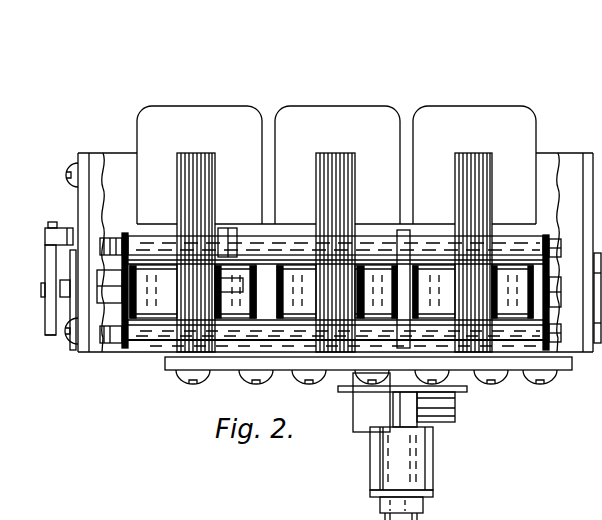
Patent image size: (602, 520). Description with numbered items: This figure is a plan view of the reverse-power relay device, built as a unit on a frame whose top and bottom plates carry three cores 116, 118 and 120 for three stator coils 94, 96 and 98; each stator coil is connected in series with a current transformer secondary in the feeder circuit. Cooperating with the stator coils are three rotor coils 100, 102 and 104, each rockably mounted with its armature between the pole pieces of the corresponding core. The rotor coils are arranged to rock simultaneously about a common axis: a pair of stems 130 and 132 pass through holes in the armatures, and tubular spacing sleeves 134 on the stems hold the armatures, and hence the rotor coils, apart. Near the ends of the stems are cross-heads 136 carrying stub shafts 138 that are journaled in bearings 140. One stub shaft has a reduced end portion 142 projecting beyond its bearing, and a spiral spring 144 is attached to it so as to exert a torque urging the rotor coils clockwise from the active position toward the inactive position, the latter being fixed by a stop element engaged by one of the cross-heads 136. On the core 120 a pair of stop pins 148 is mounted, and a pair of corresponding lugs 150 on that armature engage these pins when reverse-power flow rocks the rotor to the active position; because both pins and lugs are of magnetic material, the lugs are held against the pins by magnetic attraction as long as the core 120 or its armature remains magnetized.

The stator coil 94 is at (488, 112).
The stator coil 96 is at (351, 110).
The stator coil 98 is at (229, 106).
The rotor coil 100 is at (500, 263).
The rotor coil 102 is at (366, 266).
The rotor coil 104 is at (163, 310).
The core 116 is at (463, 152).
The core 118 is at (336, 152).
The core 120 is at (200, 152).
The stem 130 is at (110, 233).
The stem 132 is at (118, 342).
The tubular spacing sleeve 134 is at (165, 340).
The cross-head 136 is at (126, 250).
The stub shaft 138 is at (558, 268).
The bearing 140 is at (71, 228).
The reduced end portion 142 is at (43, 280).
The spiral spring 144 is at (48, 328).
The stop pin 148 is at (232, 288).
The lug 150 is at (222, 232).